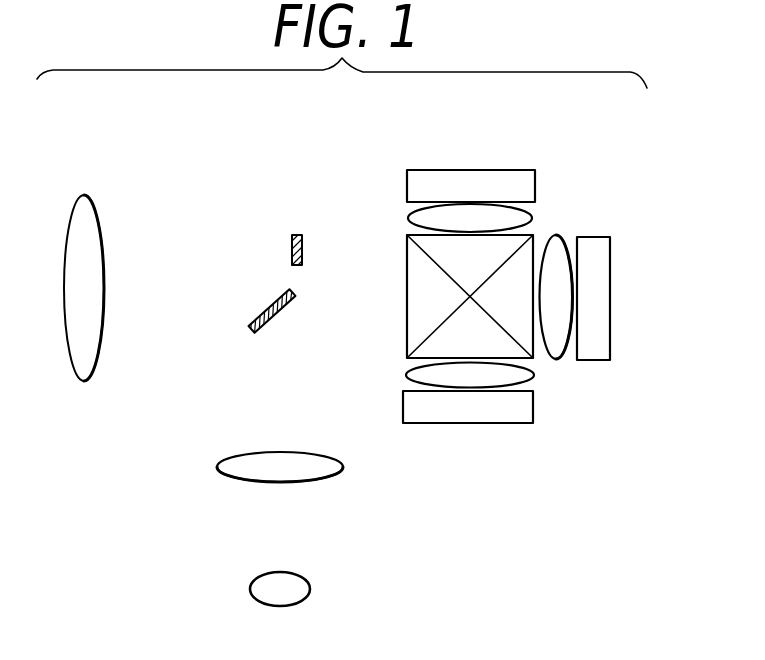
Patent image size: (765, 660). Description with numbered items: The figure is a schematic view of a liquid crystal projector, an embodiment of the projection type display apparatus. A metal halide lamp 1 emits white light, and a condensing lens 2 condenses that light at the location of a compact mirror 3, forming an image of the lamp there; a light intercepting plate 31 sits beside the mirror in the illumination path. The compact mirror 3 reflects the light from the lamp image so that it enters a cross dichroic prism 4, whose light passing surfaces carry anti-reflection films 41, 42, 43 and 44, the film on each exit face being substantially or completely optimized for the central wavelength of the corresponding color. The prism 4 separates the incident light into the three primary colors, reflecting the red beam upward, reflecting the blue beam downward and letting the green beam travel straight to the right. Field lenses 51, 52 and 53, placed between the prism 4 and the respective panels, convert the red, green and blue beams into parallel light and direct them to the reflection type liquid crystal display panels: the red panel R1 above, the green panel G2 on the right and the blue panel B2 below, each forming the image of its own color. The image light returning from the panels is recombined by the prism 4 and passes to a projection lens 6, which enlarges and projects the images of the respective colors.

The metal halide lamp 1 is at (310, 585).
The condensing lens 2 is at (328, 480).
The compact mirror 3 is at (273, 302).
The light intercepting plate 31 is at (297, 235).
The cross dichroic prism 4 is at (540, 233).
The anti-reflection film 41 is at (537, 222).
The anti-reflection film 42 is at (540, 379).
The anti-reflection film 43 is at (405, 366).
The anti-reflection film 44 is at (407, 268).
The field lens 51 is at (422, 205).
The field lens 52 is at (560, 233).
The field lens 53 is at (425, 392).
The projection lens 6 is at (85, 381).
The reflection type liquid crystal display panel R1 is at (485, 170).
The green liquid crystal light valve G2 is at (610, 283).
The blue liquid crystal light valve B2 is at (536, 419).